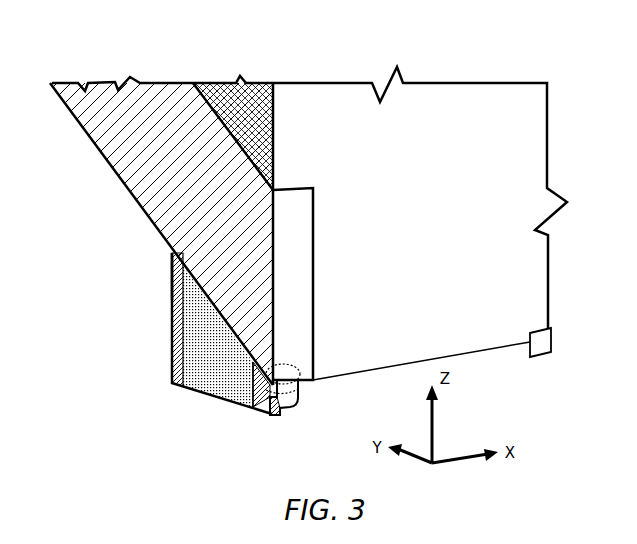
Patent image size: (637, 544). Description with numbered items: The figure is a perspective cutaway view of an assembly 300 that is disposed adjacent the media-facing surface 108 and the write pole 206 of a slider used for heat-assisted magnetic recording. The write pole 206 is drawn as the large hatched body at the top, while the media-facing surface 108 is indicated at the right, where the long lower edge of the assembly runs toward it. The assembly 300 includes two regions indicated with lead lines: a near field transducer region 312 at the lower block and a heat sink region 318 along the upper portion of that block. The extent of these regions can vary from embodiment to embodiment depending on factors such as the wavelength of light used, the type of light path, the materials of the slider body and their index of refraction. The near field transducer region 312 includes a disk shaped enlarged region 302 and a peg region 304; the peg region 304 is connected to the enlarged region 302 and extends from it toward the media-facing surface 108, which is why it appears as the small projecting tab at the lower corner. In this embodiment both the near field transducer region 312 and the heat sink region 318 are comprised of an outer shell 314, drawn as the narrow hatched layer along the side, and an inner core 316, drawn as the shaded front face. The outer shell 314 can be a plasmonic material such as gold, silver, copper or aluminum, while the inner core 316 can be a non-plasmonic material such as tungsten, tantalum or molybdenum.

The media-facing surface 108 is at (538, 358).
The write pole 206 is at (155, 85).
The assembly 300 is at (122, 322).
The enlarged region 302 is at (297, 400).
The peg region 304 is at (282, 410).
The near field transducer region 312 is at (257, 426).
The outer shell 314 is at (172, 345).
The inner core 316 is at (208, 383).
The heat sink region 318 is at (157, 295).